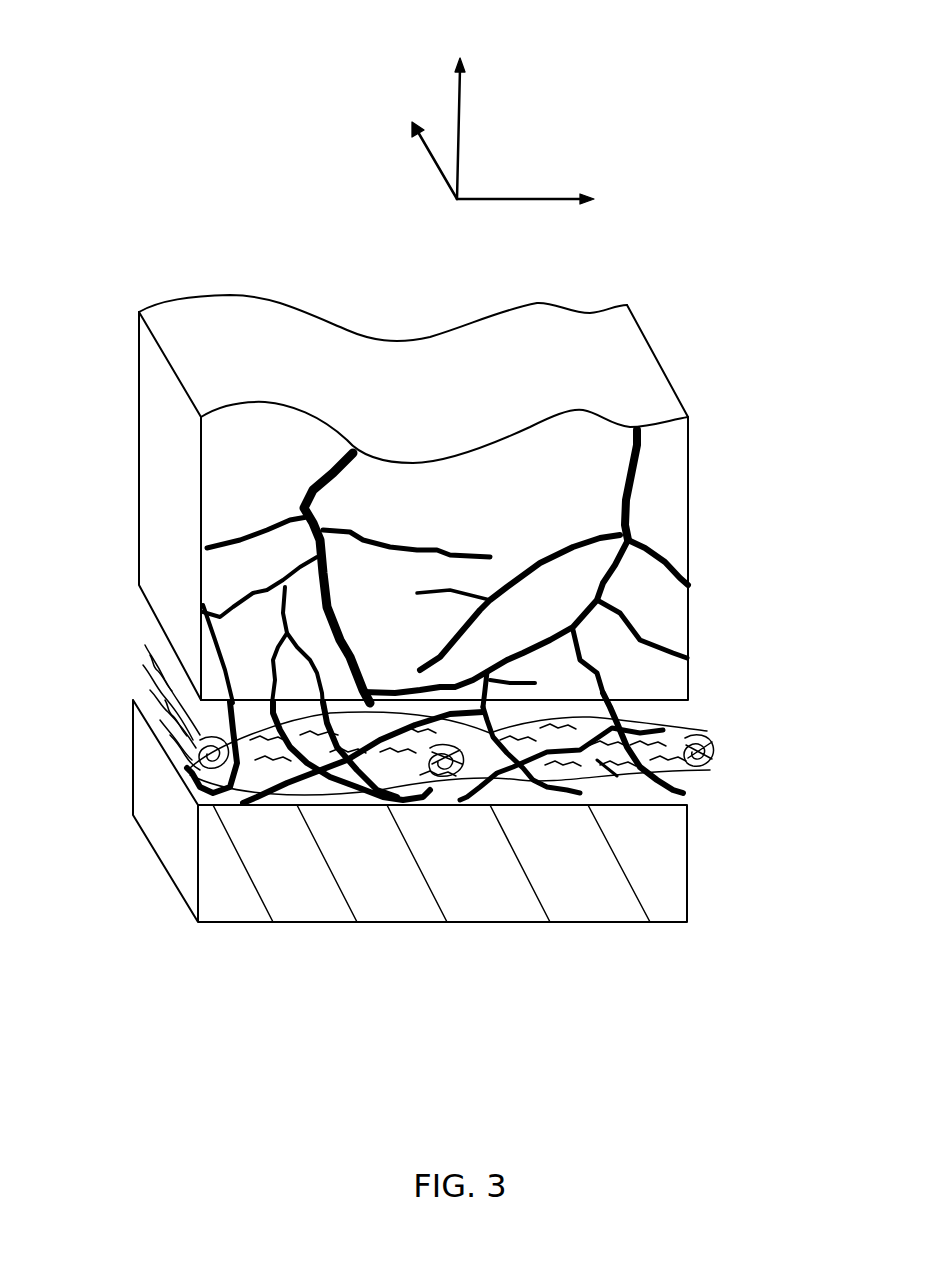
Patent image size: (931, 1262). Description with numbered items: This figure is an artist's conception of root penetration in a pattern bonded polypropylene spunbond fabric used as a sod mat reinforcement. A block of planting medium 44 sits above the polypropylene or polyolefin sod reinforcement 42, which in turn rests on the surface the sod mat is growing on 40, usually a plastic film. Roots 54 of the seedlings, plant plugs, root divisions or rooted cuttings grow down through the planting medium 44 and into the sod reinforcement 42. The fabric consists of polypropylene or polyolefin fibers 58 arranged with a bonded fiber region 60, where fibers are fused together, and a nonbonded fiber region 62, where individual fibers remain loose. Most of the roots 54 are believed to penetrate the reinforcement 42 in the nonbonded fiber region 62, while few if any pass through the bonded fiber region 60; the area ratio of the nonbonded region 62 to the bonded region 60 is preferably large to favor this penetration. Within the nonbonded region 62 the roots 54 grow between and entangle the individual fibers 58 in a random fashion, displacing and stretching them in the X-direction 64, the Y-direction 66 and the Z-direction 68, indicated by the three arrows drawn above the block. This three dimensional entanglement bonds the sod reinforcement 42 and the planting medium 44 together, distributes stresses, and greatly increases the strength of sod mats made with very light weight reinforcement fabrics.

The surface the sod mat is growing on 40 is at (590, 923).
The polypropylene or polyolefin sod reinforcement 42 is at (673, 772).
The planting medium 44 is at (688, 447).
The seedling, plant plug, root division, or rooted cutting plant roots 54 is at (613, 707).
The polypropylene or polyolefin fibers 58 is at (610, 773).
The bonded fiber region 60 is at (693, 743).
The nonbonded fiber region 62 is at (282, 760).
The X-direction 64 is at (557, 200).
The Y-direction 66 is at (401, 154).
The Z-direction 68 is at (465, 99).